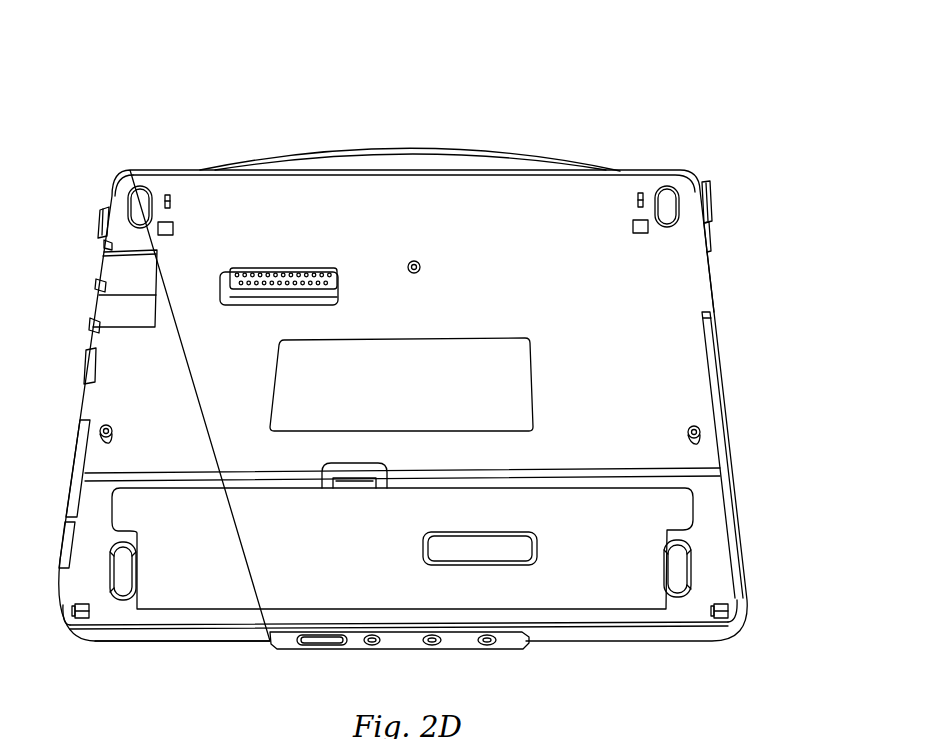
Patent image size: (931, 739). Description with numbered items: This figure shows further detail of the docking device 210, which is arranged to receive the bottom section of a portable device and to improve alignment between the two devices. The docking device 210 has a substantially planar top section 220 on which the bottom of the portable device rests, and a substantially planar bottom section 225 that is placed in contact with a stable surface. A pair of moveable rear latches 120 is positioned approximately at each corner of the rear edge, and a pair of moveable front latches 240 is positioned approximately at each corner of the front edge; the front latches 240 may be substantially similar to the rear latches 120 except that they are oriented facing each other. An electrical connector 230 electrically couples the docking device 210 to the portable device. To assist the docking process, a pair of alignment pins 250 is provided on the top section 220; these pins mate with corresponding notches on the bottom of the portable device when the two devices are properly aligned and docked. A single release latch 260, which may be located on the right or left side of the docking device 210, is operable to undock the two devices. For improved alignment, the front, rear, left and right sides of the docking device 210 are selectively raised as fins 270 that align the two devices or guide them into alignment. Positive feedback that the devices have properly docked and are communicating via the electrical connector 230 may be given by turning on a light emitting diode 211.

The docking device 210 is at (568, 59).
The fins 270 is at (417, 150).
The release latch 260 is at (711, 203).
The substantially planar top section 220 is at (687, 291).
The moveable rear latches 120 is at (170, 202).
The electrical connector 230 is at (284, 268).
The alignment pins 250 is at (113, 428).
The moveable front latches 240 is at (76, 628).
The substantially planar bottom section 225 is at (202, 640).
The light emitting diode 211 is at (432, 650).